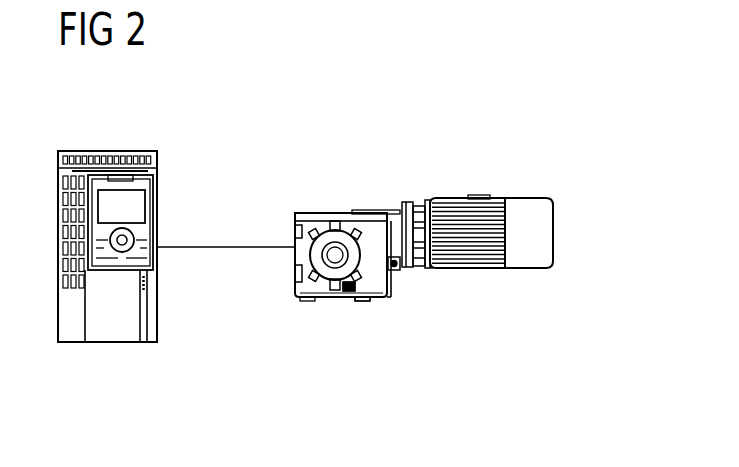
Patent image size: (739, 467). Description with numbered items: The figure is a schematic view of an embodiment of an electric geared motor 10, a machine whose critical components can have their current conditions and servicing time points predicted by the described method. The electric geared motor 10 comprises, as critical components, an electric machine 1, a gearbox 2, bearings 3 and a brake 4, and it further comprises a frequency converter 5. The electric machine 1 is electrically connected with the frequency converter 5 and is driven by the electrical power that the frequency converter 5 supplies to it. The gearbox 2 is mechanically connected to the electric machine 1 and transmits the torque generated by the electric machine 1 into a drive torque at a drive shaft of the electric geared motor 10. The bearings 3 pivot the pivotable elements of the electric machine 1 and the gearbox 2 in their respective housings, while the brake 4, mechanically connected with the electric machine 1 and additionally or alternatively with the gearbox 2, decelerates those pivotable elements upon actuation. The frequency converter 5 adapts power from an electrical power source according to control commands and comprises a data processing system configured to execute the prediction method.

The electric geared motor 10 is at (544, 95).
The electric machine 1 is at (462, 198).
The gearbox 2 is at (336, 212).
The bearings 3 is at (368, 310).
The brake 4 is at (318, 283).
The frequency converter 5 is at (107, 151).